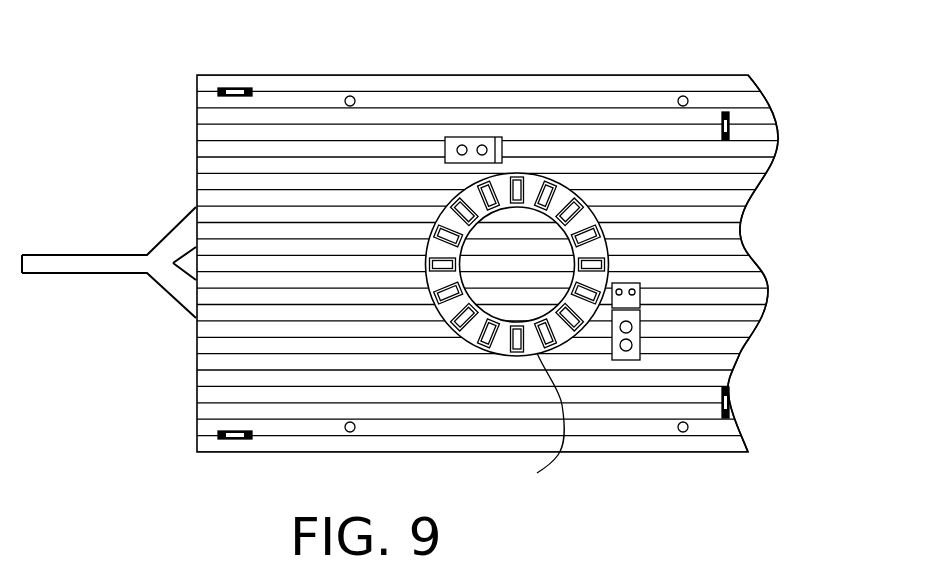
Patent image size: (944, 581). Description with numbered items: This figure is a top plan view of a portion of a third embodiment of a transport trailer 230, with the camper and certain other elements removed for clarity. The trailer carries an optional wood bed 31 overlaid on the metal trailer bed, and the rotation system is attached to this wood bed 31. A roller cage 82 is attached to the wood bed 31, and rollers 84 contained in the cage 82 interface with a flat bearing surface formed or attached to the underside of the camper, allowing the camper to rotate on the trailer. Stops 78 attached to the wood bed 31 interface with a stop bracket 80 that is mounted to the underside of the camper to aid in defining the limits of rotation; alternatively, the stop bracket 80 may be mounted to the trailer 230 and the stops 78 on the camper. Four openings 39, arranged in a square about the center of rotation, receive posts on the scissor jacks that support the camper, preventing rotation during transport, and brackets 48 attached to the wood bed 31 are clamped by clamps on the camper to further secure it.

The transport trailer 230 is at (196, 99).
The wood bed 31 is at (738, 182).
The openings 39 is at (350, 96).
The brackets 48 is at (235, 88).
The stops 78 is at (476, 137).
The stop bracket 80 is at (640, 298).
The roller cage 82 is at (532, 423).
The rollers 84 is at (557, 177).